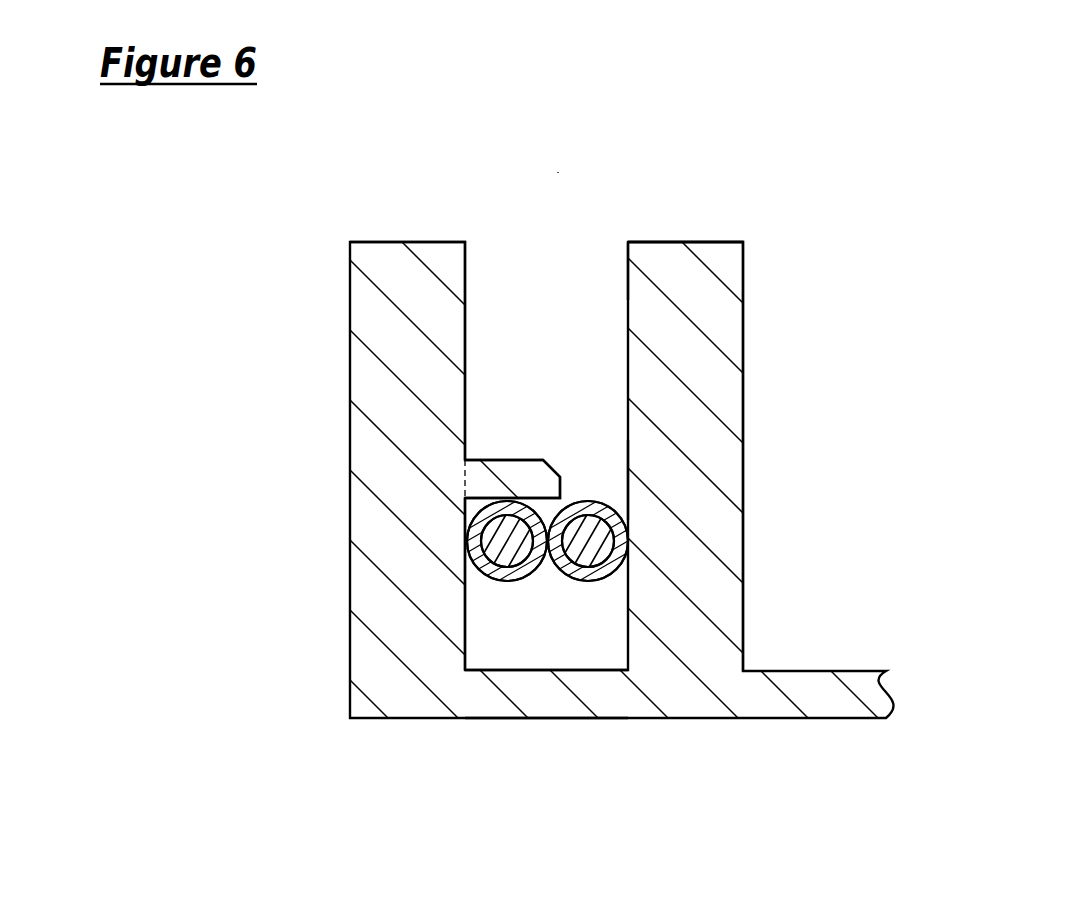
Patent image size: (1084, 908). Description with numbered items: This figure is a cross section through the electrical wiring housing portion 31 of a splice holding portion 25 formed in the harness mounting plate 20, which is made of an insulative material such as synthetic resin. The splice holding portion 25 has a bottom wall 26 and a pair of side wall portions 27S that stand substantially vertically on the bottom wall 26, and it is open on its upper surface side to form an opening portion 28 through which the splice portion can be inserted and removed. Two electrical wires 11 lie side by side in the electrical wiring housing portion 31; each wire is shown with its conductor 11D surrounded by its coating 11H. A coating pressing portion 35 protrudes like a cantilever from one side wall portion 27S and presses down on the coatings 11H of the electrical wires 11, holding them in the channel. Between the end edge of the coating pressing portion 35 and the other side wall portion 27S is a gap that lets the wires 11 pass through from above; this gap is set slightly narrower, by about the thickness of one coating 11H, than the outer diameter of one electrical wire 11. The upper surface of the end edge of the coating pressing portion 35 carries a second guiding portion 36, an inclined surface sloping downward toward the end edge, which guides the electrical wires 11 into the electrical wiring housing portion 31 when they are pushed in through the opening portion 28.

The splice holding portion 25 is at (558, 170).
The opening portion 28 is at (628, 268).
The side wall portion 27S is at (370, 373).
The coating pressing portion 35 is at (508, 473).
The second guiding portion 36 is at (557, 468).
The electrical wiring housing portion 31 is at (467, 573).
The harness mounting plate 20 is at (385, 693).
The bottom wall 26 is at (573, 703).
The electrical wire 11 is at (580, 540).
The conductor 11D is at (595, 552).
The coating 11H is at (618, 560).